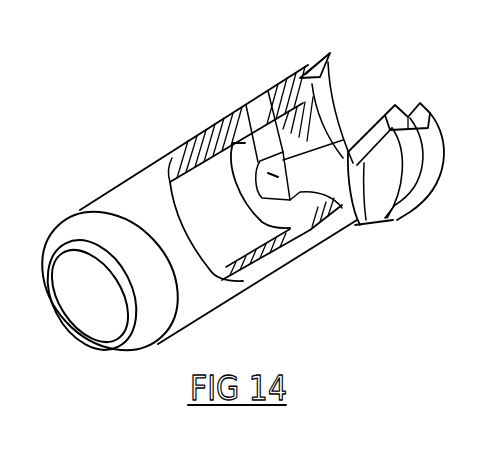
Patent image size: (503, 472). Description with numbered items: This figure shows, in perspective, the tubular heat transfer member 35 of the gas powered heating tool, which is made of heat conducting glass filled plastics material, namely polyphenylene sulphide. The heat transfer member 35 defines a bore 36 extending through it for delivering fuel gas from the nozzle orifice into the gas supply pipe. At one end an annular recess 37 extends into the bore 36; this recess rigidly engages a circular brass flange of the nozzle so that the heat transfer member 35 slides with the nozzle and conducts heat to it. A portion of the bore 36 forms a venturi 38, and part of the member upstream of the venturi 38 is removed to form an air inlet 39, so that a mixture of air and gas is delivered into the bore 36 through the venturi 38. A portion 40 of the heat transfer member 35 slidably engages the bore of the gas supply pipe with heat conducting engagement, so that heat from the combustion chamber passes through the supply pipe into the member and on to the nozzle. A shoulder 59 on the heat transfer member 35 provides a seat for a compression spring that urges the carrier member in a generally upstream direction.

The tubular heat transfer member 35 is at (207, 296).
The bore 36 is at (262, 232).
The annular recess 37 is at (410, 105).
The venturi 38 is at (372, 140).
The air inlet 39 is at (372, 150).
The portion of the heat transfer member 40 is at (145, 178).
The shoulder 59 is at (408, 187).